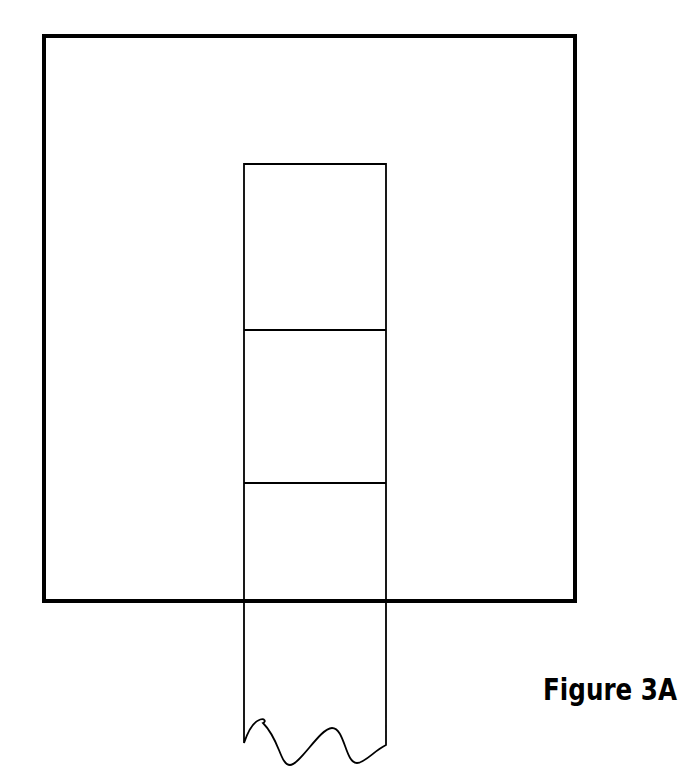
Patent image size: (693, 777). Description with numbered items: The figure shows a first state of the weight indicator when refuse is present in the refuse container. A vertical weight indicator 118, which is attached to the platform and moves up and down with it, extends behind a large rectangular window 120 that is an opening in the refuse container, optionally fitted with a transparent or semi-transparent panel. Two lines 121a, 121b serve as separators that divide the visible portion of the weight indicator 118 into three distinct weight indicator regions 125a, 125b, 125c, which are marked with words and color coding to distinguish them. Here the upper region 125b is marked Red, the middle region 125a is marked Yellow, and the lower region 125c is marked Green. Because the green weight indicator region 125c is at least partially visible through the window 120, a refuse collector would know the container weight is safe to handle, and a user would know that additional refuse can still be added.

The window 120 is at (585, 93).
The weight indicator 118 is at (386, 683).
The line separator 121a is at (386, 330).
The line separator 121b is at (386, 483).
The weight indicator region 125b is at (268, 272).
The weight indicator region 125a is at (257, 390).
The weight indicator region 125c is at (273, 543).